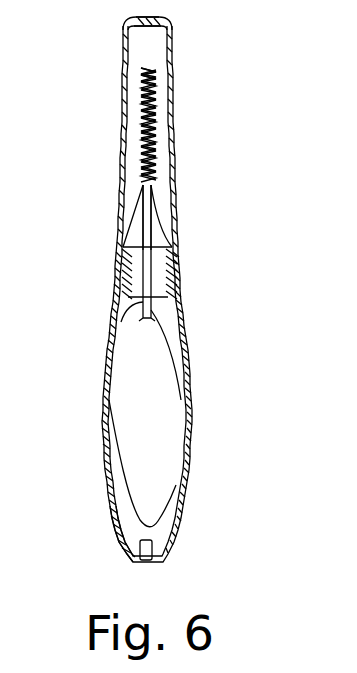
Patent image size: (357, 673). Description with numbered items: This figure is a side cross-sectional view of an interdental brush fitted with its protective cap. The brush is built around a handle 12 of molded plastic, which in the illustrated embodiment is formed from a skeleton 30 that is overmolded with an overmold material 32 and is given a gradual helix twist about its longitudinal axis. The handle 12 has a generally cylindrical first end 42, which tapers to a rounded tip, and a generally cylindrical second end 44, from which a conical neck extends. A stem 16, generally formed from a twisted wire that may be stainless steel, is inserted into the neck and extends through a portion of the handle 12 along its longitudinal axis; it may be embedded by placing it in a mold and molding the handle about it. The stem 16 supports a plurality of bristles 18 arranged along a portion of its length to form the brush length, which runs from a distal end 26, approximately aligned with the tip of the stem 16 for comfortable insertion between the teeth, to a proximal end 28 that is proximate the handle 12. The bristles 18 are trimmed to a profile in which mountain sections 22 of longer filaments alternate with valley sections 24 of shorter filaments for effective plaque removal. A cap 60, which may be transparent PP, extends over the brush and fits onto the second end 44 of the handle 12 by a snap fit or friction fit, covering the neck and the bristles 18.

The handle portion 12 is at (128, 410).
The stem 16 is at (143, 210).
The bristles 18 is at (141, 82).
The mountain sections 22 is at (151, 116).
The valley sections 24 is at (151, 140).
The distal end of the brush length 26 is at (146, 71).
The proximal end of the brush length 28 is at (145, 183).
The skeleton 30 is at (122, 340).
The overmold material 32 is at (108, 507).
The first end 42 is at (130, 554).
The second end 44 is at (142, 252).
The cap 60 is at (123, 62).